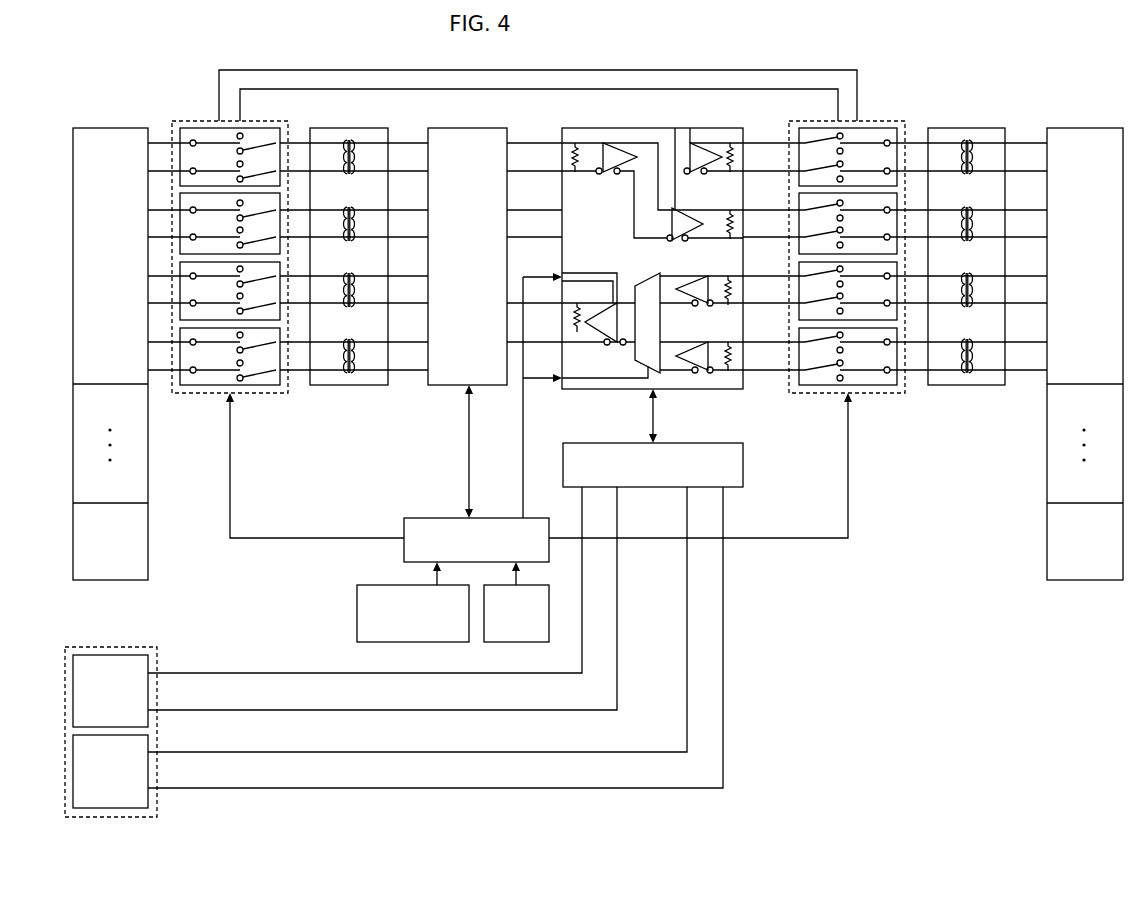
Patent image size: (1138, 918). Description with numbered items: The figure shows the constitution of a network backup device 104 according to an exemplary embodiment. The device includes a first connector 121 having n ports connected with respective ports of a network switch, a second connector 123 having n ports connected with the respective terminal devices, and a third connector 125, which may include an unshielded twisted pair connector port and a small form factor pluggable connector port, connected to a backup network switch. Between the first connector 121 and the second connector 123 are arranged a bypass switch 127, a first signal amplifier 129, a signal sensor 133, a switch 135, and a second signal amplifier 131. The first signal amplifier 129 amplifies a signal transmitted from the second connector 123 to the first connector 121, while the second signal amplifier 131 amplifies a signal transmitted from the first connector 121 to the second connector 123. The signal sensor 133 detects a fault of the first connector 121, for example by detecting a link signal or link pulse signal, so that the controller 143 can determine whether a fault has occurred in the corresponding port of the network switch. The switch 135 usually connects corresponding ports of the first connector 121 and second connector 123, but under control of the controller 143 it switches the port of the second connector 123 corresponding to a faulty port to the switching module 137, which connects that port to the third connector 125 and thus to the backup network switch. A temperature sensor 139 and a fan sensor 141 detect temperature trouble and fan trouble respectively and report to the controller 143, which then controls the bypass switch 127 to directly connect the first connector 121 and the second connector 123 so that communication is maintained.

The network backup device 104 is at (77, 82).
The first connector 121 is at (150, 566).
The second connector 123 is at (1045, 569).
The third connector 125 is at (112, 646).
The bypass switch 127 is at (254, 395).
The first signal amplifier 129 is at (345, 393).
The second signal amplifier 131 is at (965, 388).
The signal sensor 133 is at (490, 388).
The switch 135 is at (713, 389).
The switching module 137 is at (744, 463).
The temperature sensor 139 is at (356, 617).
The fan sensor 141 is at (551, 611).
The controller 143 is at (434, 517).